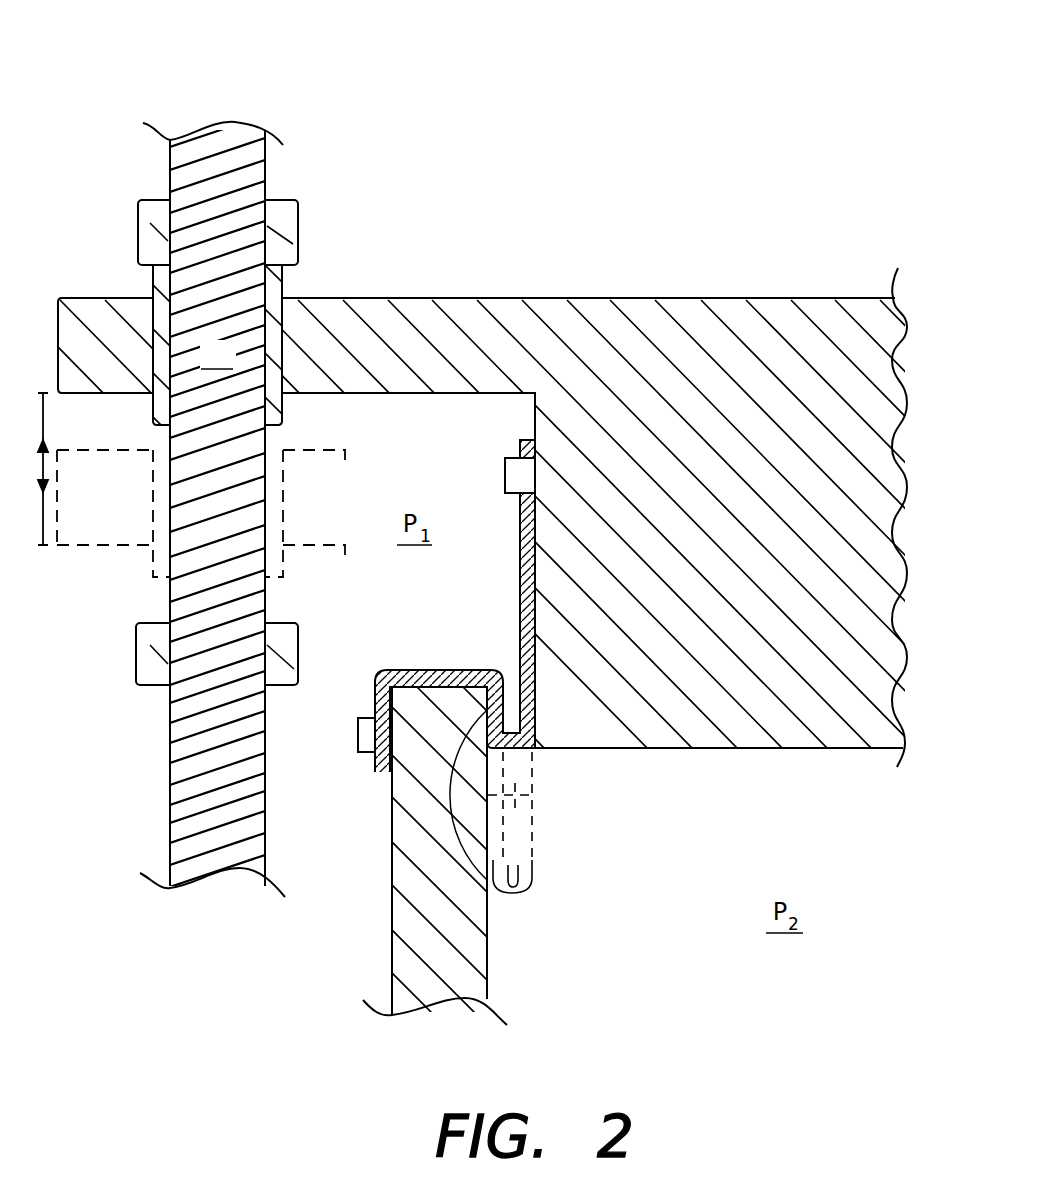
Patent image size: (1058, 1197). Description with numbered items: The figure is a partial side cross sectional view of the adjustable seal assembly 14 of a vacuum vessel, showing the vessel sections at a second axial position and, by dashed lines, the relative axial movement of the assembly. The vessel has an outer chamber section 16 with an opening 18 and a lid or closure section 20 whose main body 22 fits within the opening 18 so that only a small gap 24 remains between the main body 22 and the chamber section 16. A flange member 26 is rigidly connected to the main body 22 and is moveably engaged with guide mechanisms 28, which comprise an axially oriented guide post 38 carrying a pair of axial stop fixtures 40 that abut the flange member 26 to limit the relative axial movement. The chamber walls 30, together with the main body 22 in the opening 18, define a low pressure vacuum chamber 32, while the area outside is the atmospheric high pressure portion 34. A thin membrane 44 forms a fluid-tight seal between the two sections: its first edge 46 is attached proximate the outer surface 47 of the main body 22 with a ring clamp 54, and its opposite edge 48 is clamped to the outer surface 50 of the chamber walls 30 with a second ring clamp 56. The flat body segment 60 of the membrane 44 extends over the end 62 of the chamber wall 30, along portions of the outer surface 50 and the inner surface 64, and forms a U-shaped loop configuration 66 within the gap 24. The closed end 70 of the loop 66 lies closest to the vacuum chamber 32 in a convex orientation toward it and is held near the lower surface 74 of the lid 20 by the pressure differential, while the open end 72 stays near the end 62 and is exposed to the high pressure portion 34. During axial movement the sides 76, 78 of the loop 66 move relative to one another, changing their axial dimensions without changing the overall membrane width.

The adjustable seal assembly 14 is at (899, 122).
The outer chamber section 16 is at (341, 989).
The opening 18 is at (848, 778).
The lid or closure section 20 is at (680, 285).
The main body 22 is at (703, 551).
The gap 24 is at (517, 810).
The flange member 26 is at (413, 332).
The guide mechanisms 28 is at (126, 769).
The chamber walls 30 is at (437, 940).
The vacuum chamber 32 is at (745, 927).
The high pressure portion 34 is at (352, 511).
The guide post 38 is at (201, 369).
The axial stop fixtures 40 is at (150, 236).
The thin membrane 44 is at (527, 600).
The first edge 46 is at (524, 447).
The outer surface 47 is at (535, 418).
The opposite edge 48 is at (385, 773).
The outer surface 50 is at (392, 882).
The ring clamp 54 is at (505, 473).
The second ring clamp 56 is at (358, 743).
The flat body segment 60 is at (520, 541).
The end 62 is at (421, 691).
The inner surface 64 is at (487, 942).
The loop configuration 66 is at (517, 752).
The closed end 70 is at (521, 760).
The open end 72 is at (508, 667).
The lower surface 74 is at (733, 750).
The side of loop 76 is at (500, 895).
The side of loop 78 is at (537, 713).